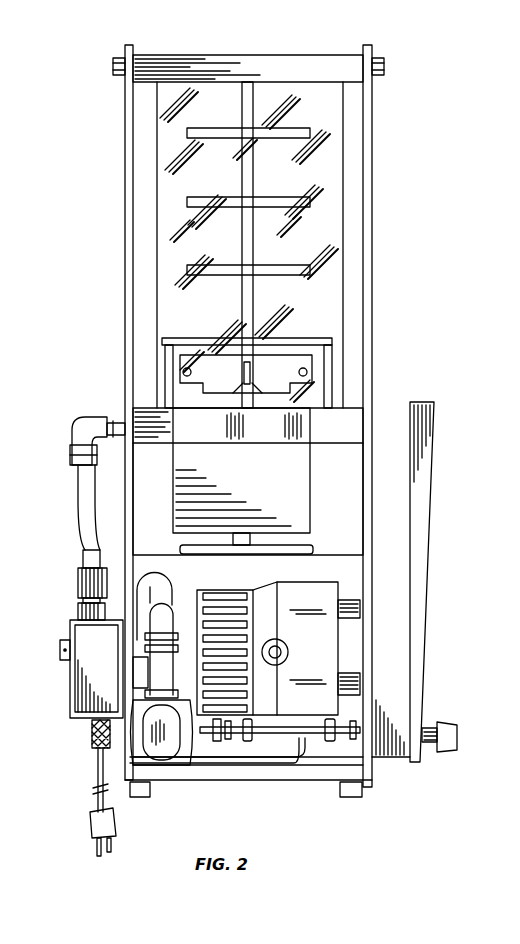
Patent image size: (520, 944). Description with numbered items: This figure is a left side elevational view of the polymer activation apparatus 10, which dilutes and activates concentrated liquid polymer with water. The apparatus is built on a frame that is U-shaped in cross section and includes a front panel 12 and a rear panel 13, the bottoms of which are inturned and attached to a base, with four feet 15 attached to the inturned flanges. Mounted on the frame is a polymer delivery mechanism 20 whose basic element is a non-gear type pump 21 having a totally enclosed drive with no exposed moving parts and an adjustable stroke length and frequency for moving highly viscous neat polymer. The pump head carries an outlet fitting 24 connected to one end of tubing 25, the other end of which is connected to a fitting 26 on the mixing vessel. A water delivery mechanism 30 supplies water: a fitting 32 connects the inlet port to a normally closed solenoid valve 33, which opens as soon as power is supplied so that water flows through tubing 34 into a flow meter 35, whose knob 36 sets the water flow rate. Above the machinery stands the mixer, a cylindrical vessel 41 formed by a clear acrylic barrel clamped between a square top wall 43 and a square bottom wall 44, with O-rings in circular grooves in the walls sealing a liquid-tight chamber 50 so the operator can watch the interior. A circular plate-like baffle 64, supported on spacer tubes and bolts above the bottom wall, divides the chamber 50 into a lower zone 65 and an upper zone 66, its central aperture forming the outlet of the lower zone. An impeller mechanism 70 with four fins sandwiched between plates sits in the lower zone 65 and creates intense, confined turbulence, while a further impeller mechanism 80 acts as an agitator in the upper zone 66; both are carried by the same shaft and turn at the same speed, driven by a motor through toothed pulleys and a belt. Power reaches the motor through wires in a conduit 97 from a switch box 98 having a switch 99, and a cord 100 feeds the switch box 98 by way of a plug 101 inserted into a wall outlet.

The polymer activation apparatus 10 is at (433, 162).
The front panel 12 is at (125, 185).
The rear panel 13 is at (372, 290).
The feet 15 is at (145, 797).
The polymer delivery mechanism 20 is at (215, 585).
The pump 21 is at (310, 588).
The outlet fitting 24 is at (82, 618).
The tubing 25 is at (88, 543).
The fitting 26 is at (85, 425).
The water delivery mechanism 30 is at (458, 461).
The fitting 32 is at (170, 683).
The solenoid valve 33 is at (163, 737).
The tubing 34 is at (303, 737).
The flow meter 35 is at (427, 570).
The knob 36 is at (445, 722).
The cylindrical vessel 41 is at (348, 156).
The top wall 43 is at (342, 63).
The bottom wall 44 is at (348, 418).
The liquid-tight chamber 50 is at (163, 245).
The baffle 64 is at (313, 338).
The lower zone 65 is at (313, 400).
The upper zone 66 is at (340, 212).
The impeller mechanism 70 is at (287, 351).
The impeller mechanism 80 is at (211, 287).
The conduit 97 is at (247, 760).
The switch box 98 is at (85, 690).
The switch 99 is at (62, 690).
The cord 100 is at (102, 777).
The plug 101 is at (93, 818).